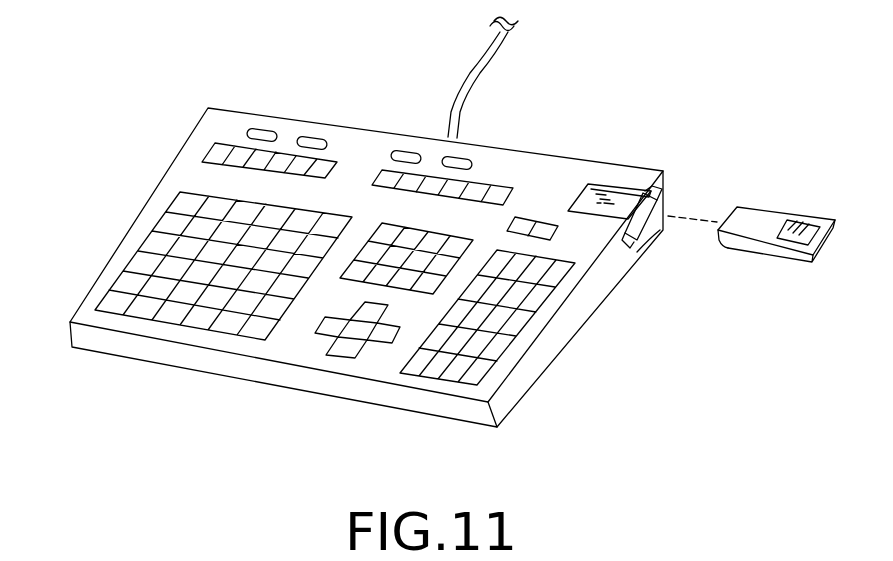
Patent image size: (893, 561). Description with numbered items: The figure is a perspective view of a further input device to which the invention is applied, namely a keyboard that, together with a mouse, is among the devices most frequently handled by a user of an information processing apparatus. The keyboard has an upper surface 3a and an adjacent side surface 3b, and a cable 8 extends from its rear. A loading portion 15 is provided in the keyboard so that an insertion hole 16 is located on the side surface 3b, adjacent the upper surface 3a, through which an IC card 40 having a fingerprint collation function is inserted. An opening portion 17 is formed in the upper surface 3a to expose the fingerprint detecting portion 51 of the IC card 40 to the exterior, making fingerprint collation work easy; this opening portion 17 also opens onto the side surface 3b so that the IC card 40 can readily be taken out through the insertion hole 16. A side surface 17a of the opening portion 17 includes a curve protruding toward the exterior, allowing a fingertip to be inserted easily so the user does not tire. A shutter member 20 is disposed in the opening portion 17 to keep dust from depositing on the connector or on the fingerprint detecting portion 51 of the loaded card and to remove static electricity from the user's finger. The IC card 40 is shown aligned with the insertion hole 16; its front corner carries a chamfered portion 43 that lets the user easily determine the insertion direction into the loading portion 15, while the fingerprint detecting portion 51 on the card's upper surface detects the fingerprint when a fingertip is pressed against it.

The upper surface 3a is at (355, 158).
The side surface 3b is at (556, 342).
The cable 8 is at (480, 67).
The shutter member 20 is at (619, 193).
The opening portion 17 is at (662, 215).
The side surface of the opening portion 17a is at (663, 190).
The insertion hole 16 is at (634, 240).
The loading portion 15 is at (655, 243).
The IC card 40 is at (786, 214).
The chamfered portion 43 is at (720, 242).
The fingerprint detecting portion 51 is at (812, 235).